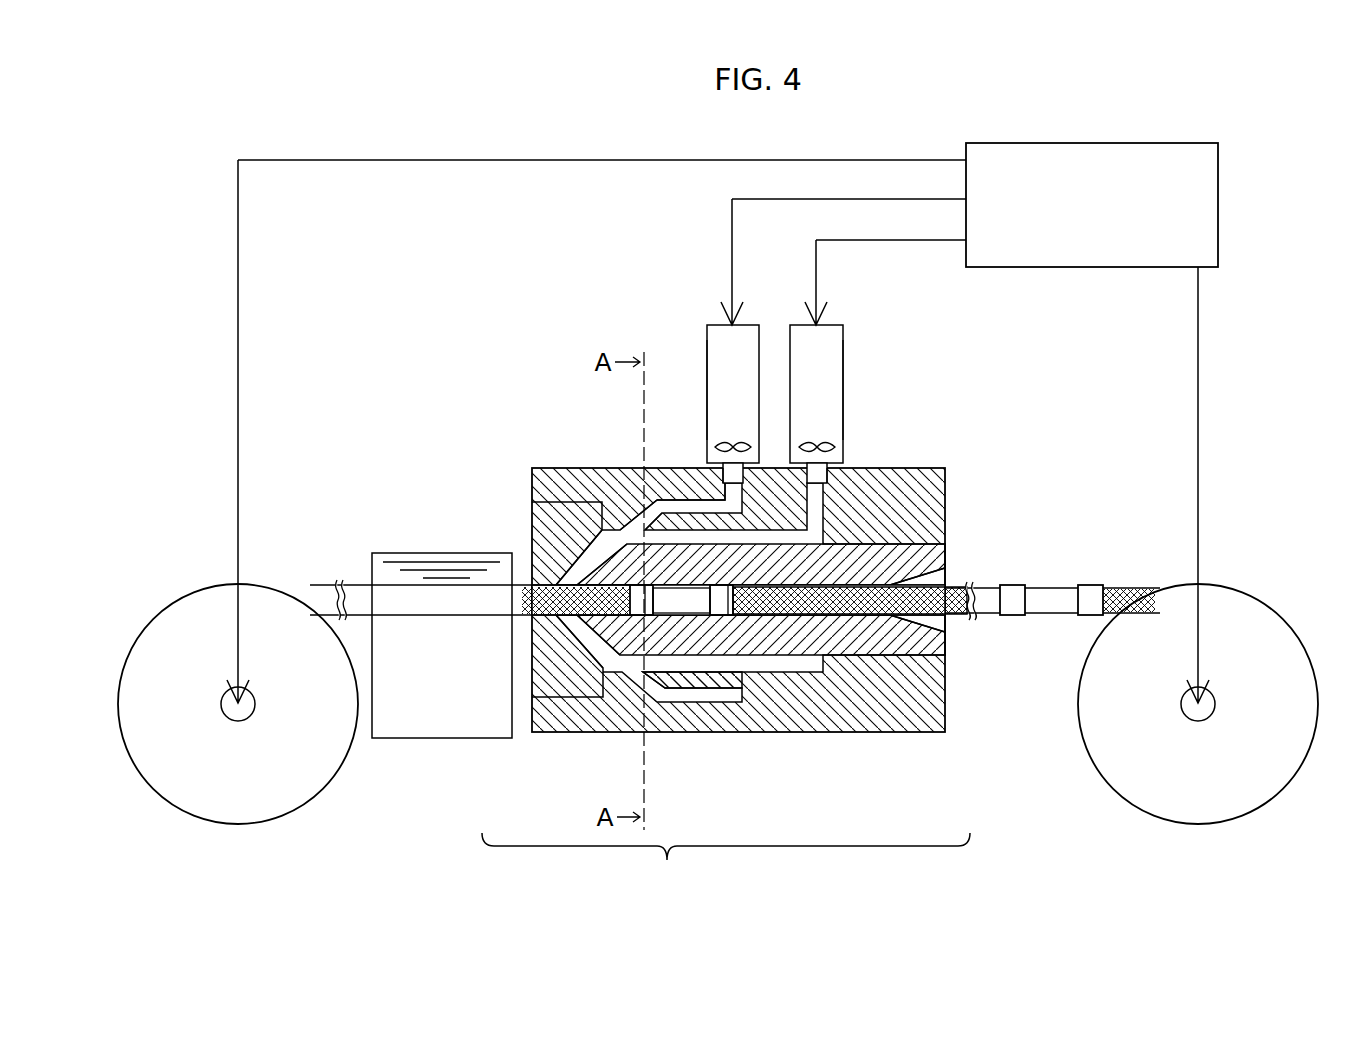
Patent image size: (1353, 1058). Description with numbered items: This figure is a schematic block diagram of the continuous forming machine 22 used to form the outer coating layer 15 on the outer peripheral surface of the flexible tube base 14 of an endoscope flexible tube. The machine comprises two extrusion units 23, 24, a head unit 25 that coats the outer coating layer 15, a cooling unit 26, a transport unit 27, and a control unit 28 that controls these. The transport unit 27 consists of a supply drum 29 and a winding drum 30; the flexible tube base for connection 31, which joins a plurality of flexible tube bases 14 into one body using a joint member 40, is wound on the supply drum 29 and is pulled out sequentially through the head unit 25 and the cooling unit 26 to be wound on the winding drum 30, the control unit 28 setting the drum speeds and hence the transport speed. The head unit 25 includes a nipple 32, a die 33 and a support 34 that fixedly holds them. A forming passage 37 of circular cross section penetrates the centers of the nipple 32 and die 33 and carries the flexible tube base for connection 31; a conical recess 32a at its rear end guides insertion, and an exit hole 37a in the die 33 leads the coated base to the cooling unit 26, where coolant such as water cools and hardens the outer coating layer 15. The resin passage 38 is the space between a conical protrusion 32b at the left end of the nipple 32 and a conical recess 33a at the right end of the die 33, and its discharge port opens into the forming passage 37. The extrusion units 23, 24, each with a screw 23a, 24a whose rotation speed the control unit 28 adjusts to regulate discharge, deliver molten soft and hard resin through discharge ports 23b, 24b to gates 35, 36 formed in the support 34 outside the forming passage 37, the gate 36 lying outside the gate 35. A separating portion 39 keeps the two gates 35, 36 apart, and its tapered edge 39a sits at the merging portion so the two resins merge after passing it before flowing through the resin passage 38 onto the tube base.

The flexible tube base 14 is at (566, 640).
The outer coating layer 15 is at (466, 598).
The continuous forming machine 22 is at (190, 226).
The extrusion unit 23 is at (878, 361).
The screw 23a is at (843, 440).
The discharge port 23b is at (840, 470).
The extrusion unit 24 is at (836, 341).
The screw 24a is at (714, 385).
The discharge port 24b is at (700, 470).
The head unit 25 is at (577, 460).
The cooling unit 26 is at (372, 550).
The transport unit 27 is at (726, 864).
The control unit 28 is at (1208, 192).
The supply drum 29 is at (1118, 737).
The winding drum 30 is at (320, 734).
The flexible tube base for connection 31 is at (1017, 580).
The nipple 32 is at (905, 555).
The conical recess 32a is at (945, 627).
The conical protrusion 32b is at (618, 625).
The die 33 is at (555, 468).
The conical recess 33a is at (600, 675).
The support 34 is at (882, 503).
The gate 35 is at (822, 650).
The gate 36 is at (728, 600).
The forming passage 37 is at (870, 690).
The exit hole 37a is at (525, 622).
The resin passage 38 is at (605, 470).
The separating portion 39 is at (676, 470).
The edge 39a is at (637, 472).
The joint member 40 is at (1068, 600).